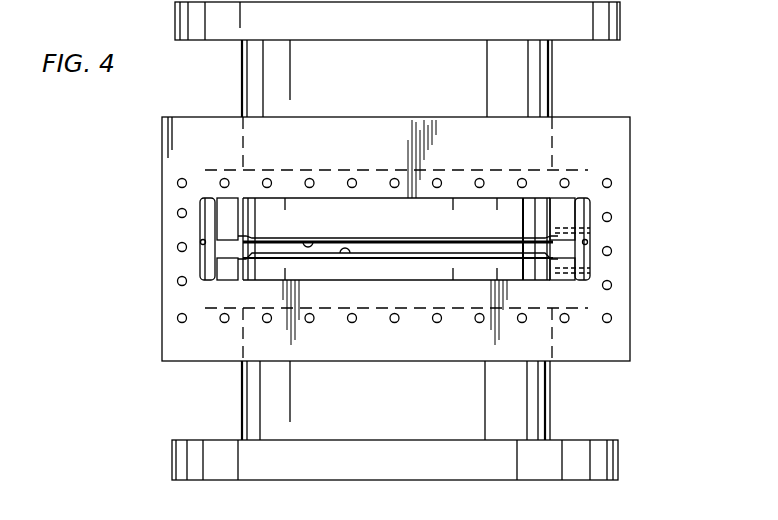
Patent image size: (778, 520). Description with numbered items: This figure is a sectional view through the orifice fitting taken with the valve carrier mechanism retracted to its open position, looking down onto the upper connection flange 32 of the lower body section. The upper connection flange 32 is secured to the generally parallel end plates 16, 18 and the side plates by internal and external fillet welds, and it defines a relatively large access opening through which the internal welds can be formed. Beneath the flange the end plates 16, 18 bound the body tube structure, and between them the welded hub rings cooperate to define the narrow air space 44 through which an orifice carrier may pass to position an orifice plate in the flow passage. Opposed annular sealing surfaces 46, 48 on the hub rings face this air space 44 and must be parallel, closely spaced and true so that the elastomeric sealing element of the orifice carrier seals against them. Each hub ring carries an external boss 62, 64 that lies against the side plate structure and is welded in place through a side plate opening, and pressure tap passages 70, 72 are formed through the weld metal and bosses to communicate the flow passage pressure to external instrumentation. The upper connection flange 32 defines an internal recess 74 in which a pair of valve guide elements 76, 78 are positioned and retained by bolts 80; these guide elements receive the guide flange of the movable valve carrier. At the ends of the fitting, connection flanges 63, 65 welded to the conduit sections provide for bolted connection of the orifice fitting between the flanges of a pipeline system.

The end plate 16 is at (343, 172).
The end plate 18 is at (431, 301).
The upper connection flange 32 is at (622, 352).
The air space 44 is at (420, 248).
The sealing surface 46 is at (310, 243).
The sealing surface 48 is at (345, 254).
The external boss 62 is at (229, 208).
The connection flange 63 is at (622, 23).
The external boss 64 is at (228, 272).
The connection flange 65 is at (620, 466).
The pressure tap passage 70 is at (590, 233).
The pressure tap passage 72 is at (576, 270).
The internal recess 74 is at (488, 205).
The valve guide element 76 is at (200, 203).
The valve guide element 78 is at (592, 213).
The bolts 80 is at (203, 244).